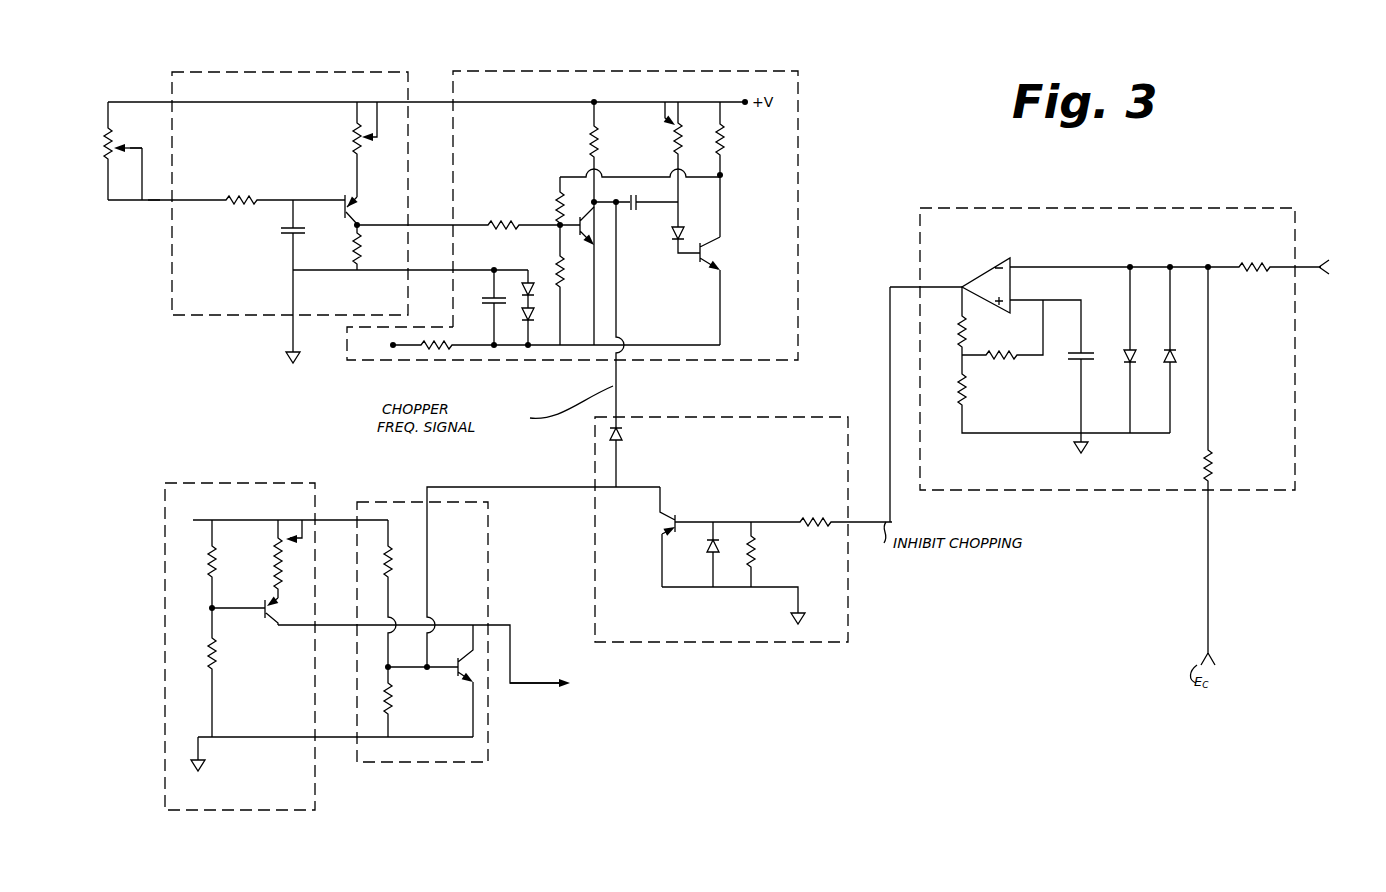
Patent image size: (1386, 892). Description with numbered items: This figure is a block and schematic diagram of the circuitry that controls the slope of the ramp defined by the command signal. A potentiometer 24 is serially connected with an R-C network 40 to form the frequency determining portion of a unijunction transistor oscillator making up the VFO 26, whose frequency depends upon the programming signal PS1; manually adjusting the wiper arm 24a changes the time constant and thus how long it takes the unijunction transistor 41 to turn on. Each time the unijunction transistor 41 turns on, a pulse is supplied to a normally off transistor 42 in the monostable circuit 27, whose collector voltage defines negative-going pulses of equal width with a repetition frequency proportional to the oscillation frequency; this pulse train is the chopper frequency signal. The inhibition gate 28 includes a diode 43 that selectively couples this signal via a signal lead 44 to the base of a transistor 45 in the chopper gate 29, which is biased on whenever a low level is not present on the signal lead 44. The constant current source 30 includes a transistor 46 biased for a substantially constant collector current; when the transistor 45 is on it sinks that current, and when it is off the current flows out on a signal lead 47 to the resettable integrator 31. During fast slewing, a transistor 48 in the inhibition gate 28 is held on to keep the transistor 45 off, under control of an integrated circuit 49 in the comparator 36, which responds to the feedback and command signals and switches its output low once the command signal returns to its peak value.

The potentiometer 24 is at (108, 160).
The wiper arm 24a is at (152, 127).
The programming signal PS1 is at (150, 202).
The VFO 26 is at (337, 83).
The monostable circuit 27 is at (685, 79).
The inhibition gate 28 is at (712, 418).
The chopper gate 29 is at (373, 753).
The constant current source 30 is at (172, 491).
The resettable integrator 31 is at (653, 693).
The comparator 36 is at (1204, 180).
The R-C network 40 is at (266, 214).
The unijunction transistor 41 is at (354, 199).
The transistor 42 is at (590, 227).
The diode 43 is at (620, 433).
The signal lead 44 is at (517, 488).
The transistor 45 is at (462, 669).
The transistor 46 is at (281, 621).
The signal lead 47 is at (549, 683).
The transistor 48 is at (680, 517).
The integrated circuit 49 is at (988, 268).